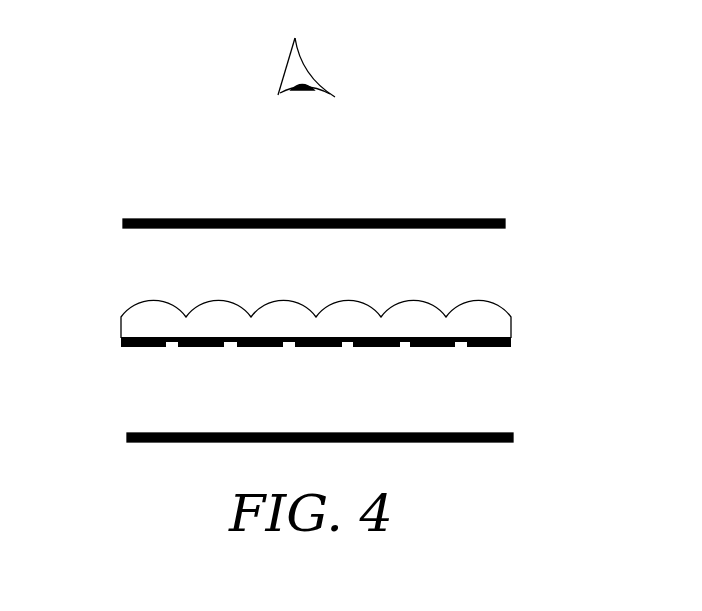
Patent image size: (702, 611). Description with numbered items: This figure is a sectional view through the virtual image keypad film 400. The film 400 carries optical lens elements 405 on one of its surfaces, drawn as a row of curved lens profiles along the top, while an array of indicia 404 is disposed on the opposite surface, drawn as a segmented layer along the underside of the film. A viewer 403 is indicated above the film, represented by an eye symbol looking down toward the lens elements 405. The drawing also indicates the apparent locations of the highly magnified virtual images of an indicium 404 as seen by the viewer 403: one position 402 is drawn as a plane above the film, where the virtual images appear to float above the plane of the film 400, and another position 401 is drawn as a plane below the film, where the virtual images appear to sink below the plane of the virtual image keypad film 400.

The virtual image keypad film 400 is at (317, 324).
The apparent location of virtual images sinking below the film plane 401 is at (146, 433).
The apparent location of virtual images floating above the film plane 402 is at (147, 219).
The viewer 403 is at (289, 63).
The array of indicia 404 is at (487, 346).
The optical lens elements 405 is at (480, 300).